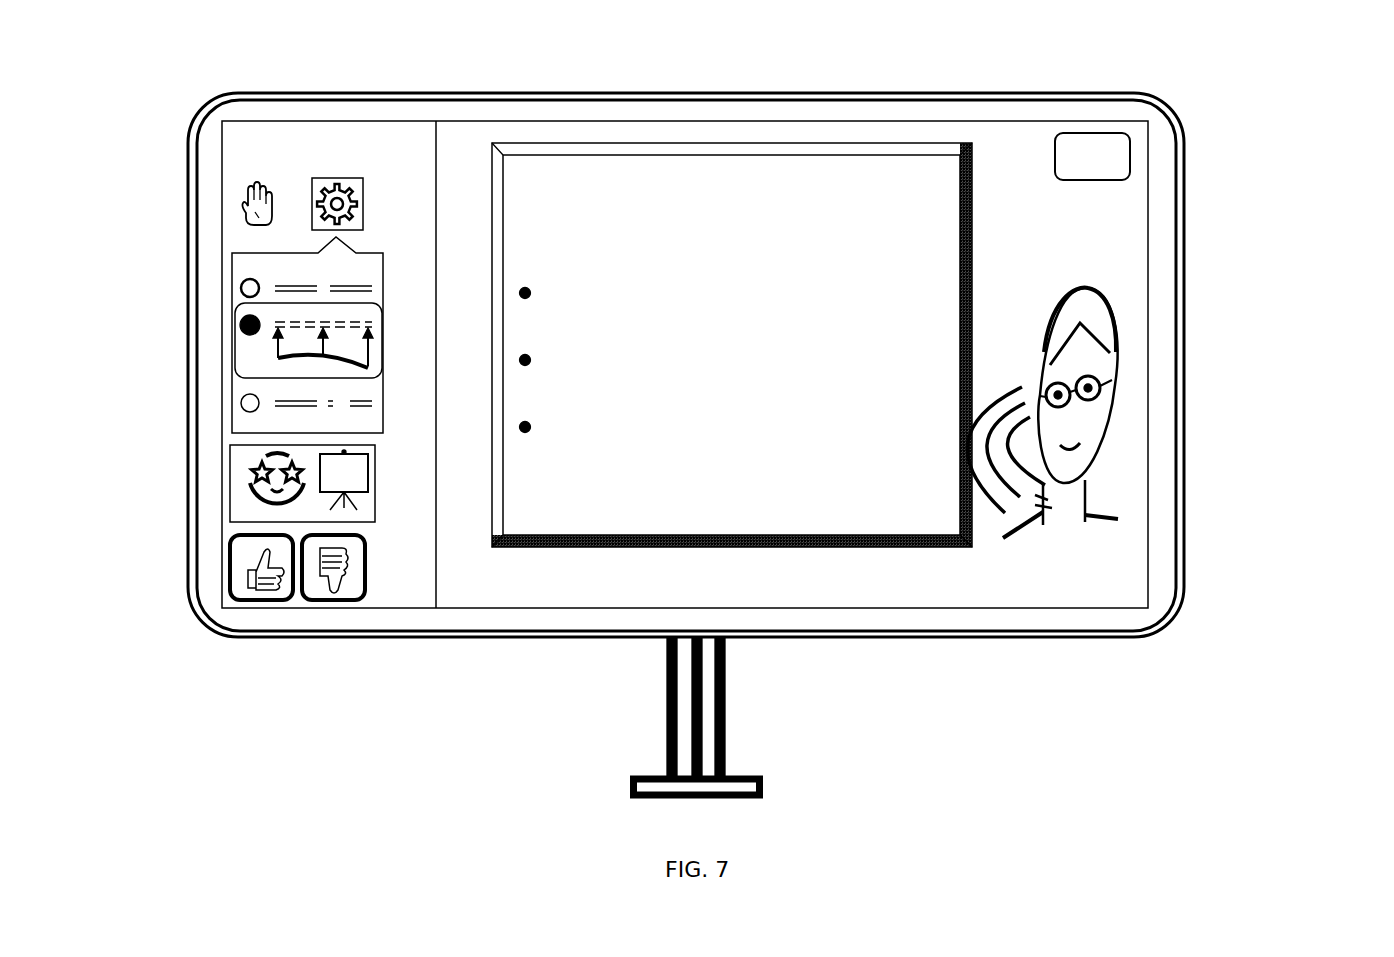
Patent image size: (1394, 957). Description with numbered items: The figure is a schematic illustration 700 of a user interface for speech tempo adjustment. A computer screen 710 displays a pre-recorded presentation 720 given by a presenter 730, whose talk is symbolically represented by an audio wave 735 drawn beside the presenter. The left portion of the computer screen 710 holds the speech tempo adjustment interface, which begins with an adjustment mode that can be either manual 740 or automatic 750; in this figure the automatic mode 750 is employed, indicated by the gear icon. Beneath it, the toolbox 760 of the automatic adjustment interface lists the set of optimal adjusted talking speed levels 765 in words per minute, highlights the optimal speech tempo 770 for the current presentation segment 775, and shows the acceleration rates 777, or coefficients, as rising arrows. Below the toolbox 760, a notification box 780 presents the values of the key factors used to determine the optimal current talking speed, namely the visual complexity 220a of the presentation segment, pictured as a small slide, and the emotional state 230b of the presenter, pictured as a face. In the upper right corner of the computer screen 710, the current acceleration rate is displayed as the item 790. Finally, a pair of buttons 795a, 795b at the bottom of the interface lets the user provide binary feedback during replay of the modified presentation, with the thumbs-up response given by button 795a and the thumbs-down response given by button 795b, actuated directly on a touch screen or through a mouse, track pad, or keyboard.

The schematic illustration 700 is at (1376, 118).
The computer screen 710 is at (188, 158).
The pre-recorded presentation 720 is at (733, 142).
The presenter 730 is at (1097, 453).
The audio wave 735 is at (998, 510).
The manual adjustment mode 740 is at (232, 205).
The automatic adjustment mode 750 is at (353, 178).
The toolbox 760 is at (237, 425).
The set of optimal adjusted talking speed levels 765 is at (295, 285).
The optimal speech tempo 770 is at (238, 323).
The current presentation segment 775 is at (238, 378).
The acceleration rates 777 is at (277, 343).
The notification box 780 is at (230, 480).
The emotional state of the presenter 230b is at (265, 507).
The visual complexity of a presentation segment 220a is at (362, 483).
The current acceleration rate item 790 is at (1130, 158).
The thumbs-up button 795a is at (230, 567).
The thumbs-down button 795b is at (367, 567).